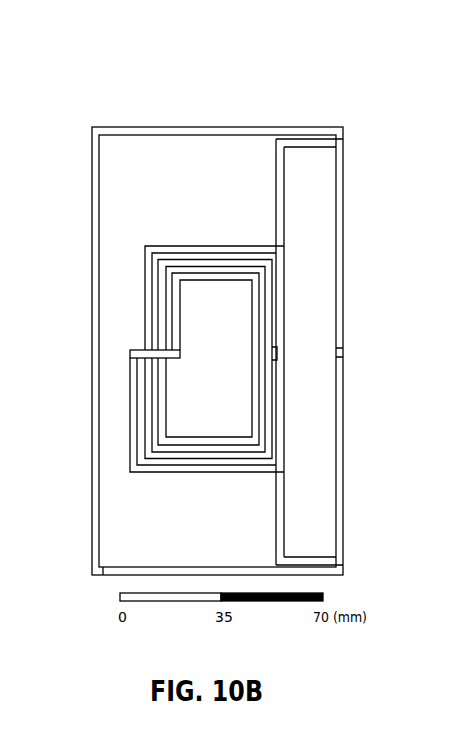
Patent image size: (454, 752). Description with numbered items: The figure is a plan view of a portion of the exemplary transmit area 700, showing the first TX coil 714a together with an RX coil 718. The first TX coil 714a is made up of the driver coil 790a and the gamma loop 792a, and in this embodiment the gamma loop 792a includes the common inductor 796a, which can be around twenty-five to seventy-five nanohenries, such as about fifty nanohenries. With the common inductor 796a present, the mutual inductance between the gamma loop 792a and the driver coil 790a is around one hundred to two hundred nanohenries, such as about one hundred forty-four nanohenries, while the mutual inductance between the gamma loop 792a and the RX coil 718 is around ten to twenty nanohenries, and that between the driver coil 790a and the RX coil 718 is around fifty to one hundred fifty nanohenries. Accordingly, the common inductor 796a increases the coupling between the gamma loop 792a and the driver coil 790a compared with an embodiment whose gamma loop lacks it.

The transmit area 700 is at (86, 86).
The first TX coil 714a is at (342, 115).
The driver coil 790a is at (99, 212).
The gamma loop 792a is at (274, 185).
The common inductor 796a is at (343, 352).
The RX coil 718 is at (252, 392).